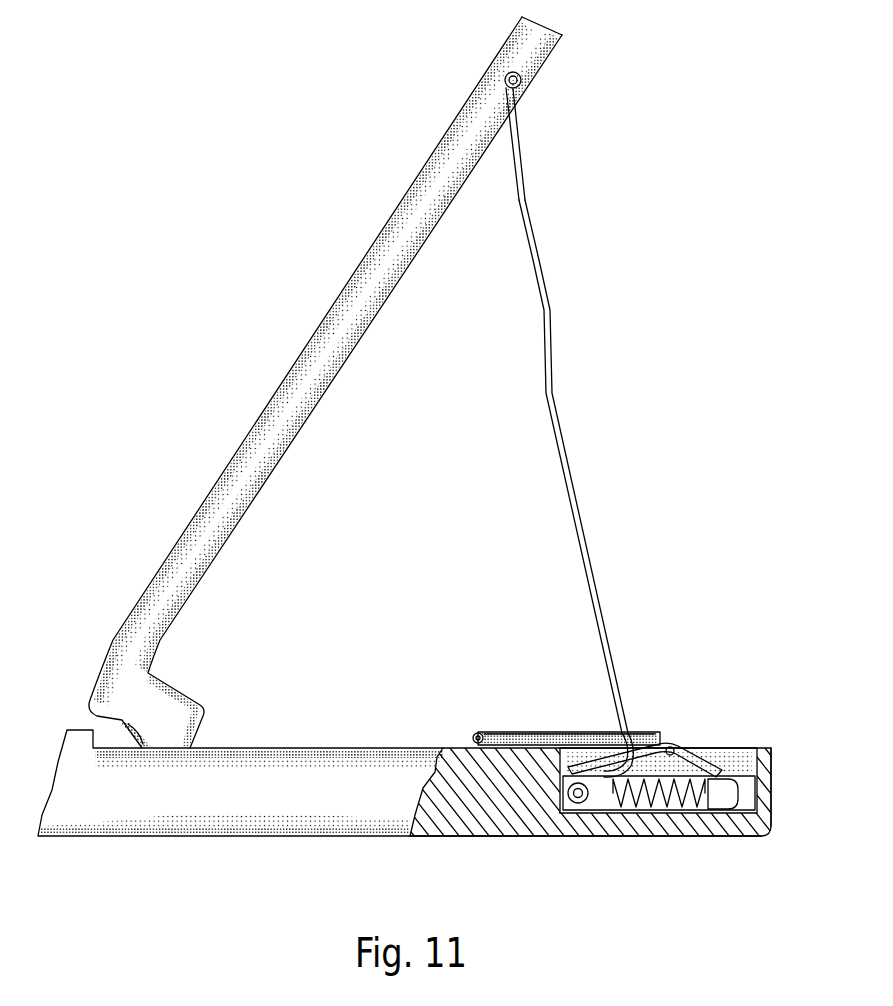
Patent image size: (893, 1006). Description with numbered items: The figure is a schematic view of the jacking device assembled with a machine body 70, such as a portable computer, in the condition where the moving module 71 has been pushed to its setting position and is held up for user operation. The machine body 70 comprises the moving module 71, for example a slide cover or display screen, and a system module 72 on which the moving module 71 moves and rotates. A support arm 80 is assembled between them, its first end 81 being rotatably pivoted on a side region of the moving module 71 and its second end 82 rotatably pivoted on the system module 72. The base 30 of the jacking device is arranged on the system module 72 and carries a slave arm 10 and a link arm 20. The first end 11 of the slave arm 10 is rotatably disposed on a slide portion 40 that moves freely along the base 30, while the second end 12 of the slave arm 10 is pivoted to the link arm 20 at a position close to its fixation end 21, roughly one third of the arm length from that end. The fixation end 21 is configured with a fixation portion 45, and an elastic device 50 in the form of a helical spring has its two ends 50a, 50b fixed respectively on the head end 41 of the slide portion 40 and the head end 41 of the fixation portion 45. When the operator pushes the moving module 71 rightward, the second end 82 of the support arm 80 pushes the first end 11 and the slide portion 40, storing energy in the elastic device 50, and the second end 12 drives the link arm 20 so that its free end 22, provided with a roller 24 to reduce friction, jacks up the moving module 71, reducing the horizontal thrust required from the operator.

The slave arm 10 is at (647, 749).
The first end 11 is at (570, 823).
The second end 12 is at (688, 750).
The link arm 20 is at (622, 732).
The fixation end 21 is at (773, 810).
The free end 22 is at (510, 732).
The roller 24 is at (472, 732).
The base 30 is at (693, 825).
The slide portion 40 is at (562, 837).
The head end 41 is at (627, 830).
The fixation portion 45 is at (772, 792).
The elastic device 50 is at (672, 817).
The end of elastic device 50a is at (620, 818).
The end of elastic device 50b is at (727, 820).
The machine body 70 is at (395, 163).
The moving module 71 is at (465, 103).
The system module 72 is at (232, 837).
The support arm 80 is at (590, 546).
The first end 81 is at (520, 153).
The second end 82 is at (618, 753).